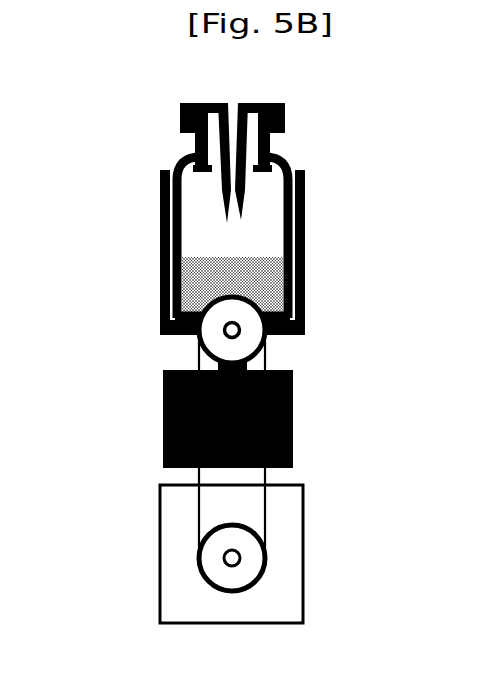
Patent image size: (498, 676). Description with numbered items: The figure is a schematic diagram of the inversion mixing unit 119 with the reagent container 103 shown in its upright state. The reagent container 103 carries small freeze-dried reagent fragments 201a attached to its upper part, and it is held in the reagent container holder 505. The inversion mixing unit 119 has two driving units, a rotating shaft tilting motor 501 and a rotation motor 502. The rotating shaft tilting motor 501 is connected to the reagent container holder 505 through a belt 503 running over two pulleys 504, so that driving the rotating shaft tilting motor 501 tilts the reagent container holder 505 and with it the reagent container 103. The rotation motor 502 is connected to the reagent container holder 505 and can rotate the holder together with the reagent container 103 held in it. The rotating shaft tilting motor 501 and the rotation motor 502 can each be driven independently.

The inversion mixing unit 119 is at (77, 101).
The reagent container 103 is at (183, 220).
The freeze-dried reagent fragments 201a is at (191, 132).
The reagent container holder 505 is at (170, 284).
The pulleys 504 is at (286, 449).
The belt 503 is at (292, 444).
The rotation motor 502 is at (180, 413).
The rotating shaft tilting motor 501 is at (181, 554).